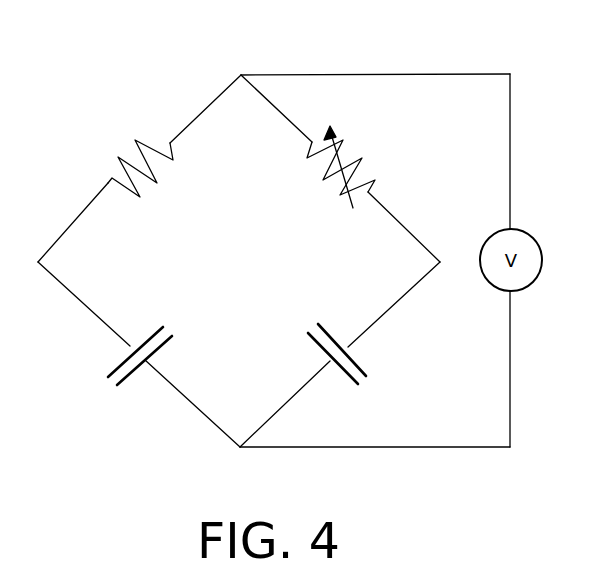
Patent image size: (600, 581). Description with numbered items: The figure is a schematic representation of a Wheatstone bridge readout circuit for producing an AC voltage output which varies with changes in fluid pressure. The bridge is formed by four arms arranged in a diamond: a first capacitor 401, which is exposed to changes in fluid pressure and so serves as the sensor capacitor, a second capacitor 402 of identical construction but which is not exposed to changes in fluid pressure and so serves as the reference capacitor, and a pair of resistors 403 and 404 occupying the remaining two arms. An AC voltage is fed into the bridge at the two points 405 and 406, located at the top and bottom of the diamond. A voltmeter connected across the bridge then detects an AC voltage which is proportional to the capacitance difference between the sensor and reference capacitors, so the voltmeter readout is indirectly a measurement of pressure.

The first capacitor 401 is at (113, 382).
The second capacitor 402 is at (368, 378).
The resistor 403 is at (127, 153).
The resistor 404 is at (353, 152).
The point 405 is at (241, 75).
The point 406 is at (240, 447).